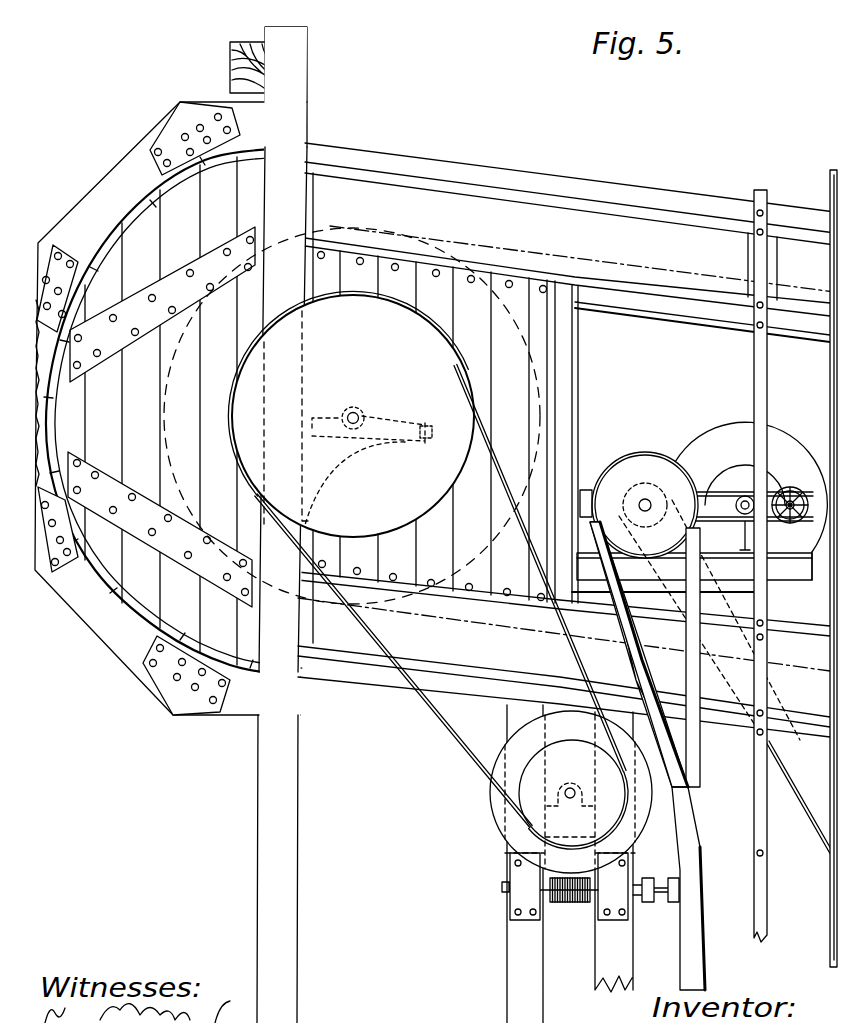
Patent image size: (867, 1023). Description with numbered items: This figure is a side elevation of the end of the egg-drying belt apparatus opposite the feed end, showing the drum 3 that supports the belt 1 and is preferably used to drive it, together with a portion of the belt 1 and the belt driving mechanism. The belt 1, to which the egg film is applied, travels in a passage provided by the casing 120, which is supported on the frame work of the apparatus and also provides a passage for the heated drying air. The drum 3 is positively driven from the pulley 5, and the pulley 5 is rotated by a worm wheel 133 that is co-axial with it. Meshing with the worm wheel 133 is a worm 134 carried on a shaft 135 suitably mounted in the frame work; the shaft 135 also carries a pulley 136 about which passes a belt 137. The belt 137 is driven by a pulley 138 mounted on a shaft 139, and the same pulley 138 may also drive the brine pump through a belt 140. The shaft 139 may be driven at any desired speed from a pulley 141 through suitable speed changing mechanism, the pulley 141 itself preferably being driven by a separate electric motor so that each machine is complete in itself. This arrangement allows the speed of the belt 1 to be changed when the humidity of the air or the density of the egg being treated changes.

The belt 1 is at (386, 656).
The drum 3 is at (381, 230).
The pulley 5 is at (570, 779).
The casing 120 is at (618, 229).
The worm wheel 133 is at (500, 828).
The worm 134 is at (577, 903).
The shaft 135 is at (662, 902).
The pulley 136 is at (706, 957).
The belt 137 is at (701, 750).
The pulley 138 is at (638, 453).
The shaft 139 is at (645, 500).
The belt 140 is at (820, 846).
The pulley 141 is at (733, 488).